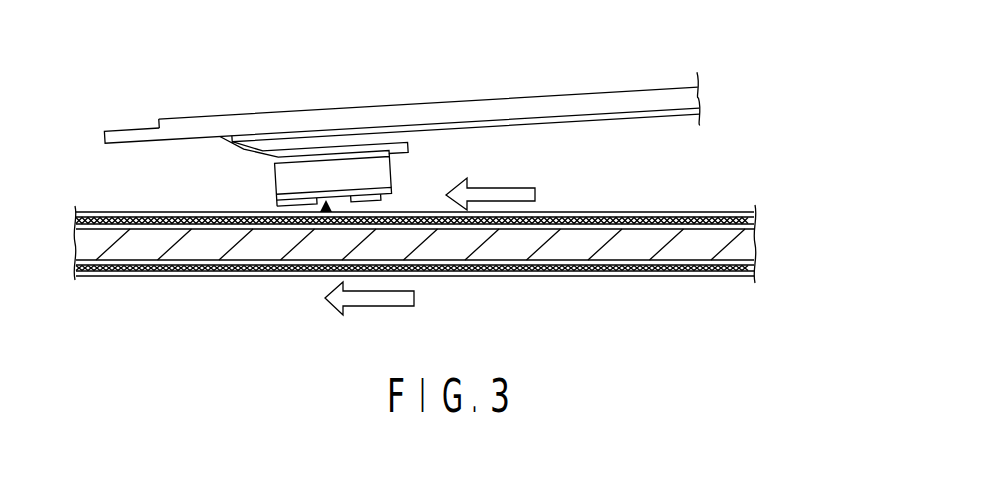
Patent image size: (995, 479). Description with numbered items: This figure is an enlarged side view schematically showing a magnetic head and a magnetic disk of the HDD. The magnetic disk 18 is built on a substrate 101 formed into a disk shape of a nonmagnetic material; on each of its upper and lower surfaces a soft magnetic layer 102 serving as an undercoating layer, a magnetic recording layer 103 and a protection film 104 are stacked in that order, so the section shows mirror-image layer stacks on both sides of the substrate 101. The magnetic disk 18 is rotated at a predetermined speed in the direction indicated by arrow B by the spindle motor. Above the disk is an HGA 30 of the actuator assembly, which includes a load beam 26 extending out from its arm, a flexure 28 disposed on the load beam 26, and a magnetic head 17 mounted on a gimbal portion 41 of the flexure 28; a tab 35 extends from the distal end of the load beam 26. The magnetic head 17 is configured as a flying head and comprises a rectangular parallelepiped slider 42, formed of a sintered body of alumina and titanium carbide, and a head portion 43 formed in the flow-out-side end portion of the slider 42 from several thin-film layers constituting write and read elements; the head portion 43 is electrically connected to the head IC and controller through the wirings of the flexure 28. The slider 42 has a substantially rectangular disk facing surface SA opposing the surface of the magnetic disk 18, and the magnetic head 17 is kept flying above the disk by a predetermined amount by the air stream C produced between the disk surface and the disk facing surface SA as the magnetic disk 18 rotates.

The HGA 30 is at (498, 90).
The load beam 26 is at (578, 100).
The tab 35 is at (133, 137).
The flexure 28 is at (644, 117).
The gimbal portion 41 is at (394, 147).
The slider 42 is at (305, 167).
The head portion 43 is at (284, 187).
The magnetic head 17 is at (406, 180).
The magnetic disk 18 is at (720, 187).
The substrate 101 is at (657, 243).
The soft magnetic layer 102 is at (757, 234).
The magnetic recording layer 103 is at (683, 218).
The protection film 104 is at (750, 211).
The disk facing surface SA is at (326, 204).
The rotation direction B is at (369, 309).
The air stream C is at (502, 194).